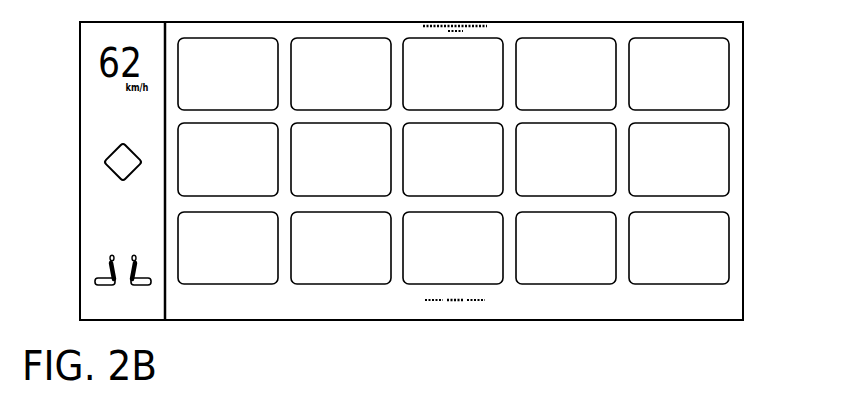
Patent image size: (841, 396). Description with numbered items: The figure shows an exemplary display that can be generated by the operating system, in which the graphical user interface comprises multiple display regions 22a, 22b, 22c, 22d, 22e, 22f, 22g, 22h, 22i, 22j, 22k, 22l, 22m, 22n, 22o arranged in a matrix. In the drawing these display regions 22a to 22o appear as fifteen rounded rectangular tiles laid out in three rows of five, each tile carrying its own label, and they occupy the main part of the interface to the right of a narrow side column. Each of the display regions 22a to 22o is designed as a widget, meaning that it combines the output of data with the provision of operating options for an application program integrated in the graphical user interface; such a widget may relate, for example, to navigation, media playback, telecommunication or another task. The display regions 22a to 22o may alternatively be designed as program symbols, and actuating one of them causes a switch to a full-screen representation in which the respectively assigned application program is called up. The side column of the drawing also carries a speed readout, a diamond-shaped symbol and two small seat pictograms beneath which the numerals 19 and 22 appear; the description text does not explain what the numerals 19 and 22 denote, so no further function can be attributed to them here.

The driver seat indicator 19 is at (104, 283).
The passenger seat indicator 22 is at (140, 283).
The display region 22a is at (206, 82).
The display region 22b is at (319, 82).
The display region 22c is at (431, 82).
The display region 22d is at (544, 82).
The display region 22e is at (657, 82).
The display region 22f is at (206, 168).
The display region 22g is at (319, 168).
The display region 22h is at (431, 168).
The display region 22i is at (544, 168).
The display region 22j is at (657, 168).
The display region 22k is at (206, 256).
The display region 22l is at (319, 256).
The display region 22m is at (431, 256).
The display region 22n is at (544, 256).
The display region 22o is at (657, 256).